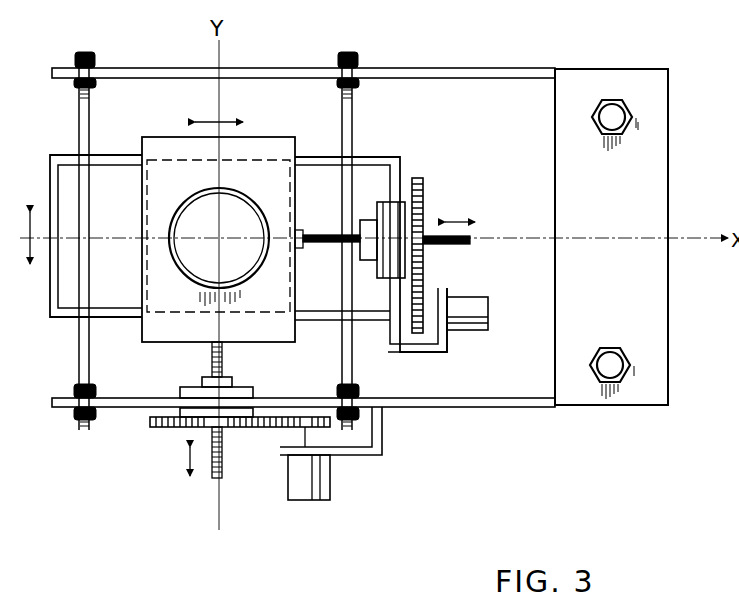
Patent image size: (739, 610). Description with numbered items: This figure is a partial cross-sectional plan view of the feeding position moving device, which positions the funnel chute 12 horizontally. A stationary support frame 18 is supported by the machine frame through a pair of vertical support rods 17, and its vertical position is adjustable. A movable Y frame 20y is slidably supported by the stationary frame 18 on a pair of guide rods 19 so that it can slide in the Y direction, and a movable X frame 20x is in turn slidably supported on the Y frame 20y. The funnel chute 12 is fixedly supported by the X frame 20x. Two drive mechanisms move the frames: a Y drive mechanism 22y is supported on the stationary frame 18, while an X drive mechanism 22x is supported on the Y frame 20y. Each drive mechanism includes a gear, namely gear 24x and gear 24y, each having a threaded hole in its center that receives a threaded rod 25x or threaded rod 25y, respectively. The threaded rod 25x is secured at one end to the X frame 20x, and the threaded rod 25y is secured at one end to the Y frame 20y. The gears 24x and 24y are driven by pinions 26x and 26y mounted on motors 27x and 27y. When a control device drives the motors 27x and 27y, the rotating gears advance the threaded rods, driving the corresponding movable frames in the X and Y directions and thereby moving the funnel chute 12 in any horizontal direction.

The funnel chute 12 is at (168, 222).
The vertical support rods 17 is at (622, 117).
The stationary support frame 18 is at (505, 69).
The guide rods 19 is at (89, 120).
The movable X frame 20x is at (268, 148).
The movable Y frame 20y is at (62, 320).
The X drive mechanism 22x is at (430, 165).
The Y drive mechanism 22y is at (164, 442).
The gear 24x is at (423, 192).
The gear 24y is at (247, 428).
The threaded rod 25x is at (325, 236).
The threaded rod 25y is at (212, 360).
The pinion 26x is at (418, 332).
The pinion 26y is at (305, 427).
The motor 27x is at (470, 297).
The motor 27y is at (332, 483).